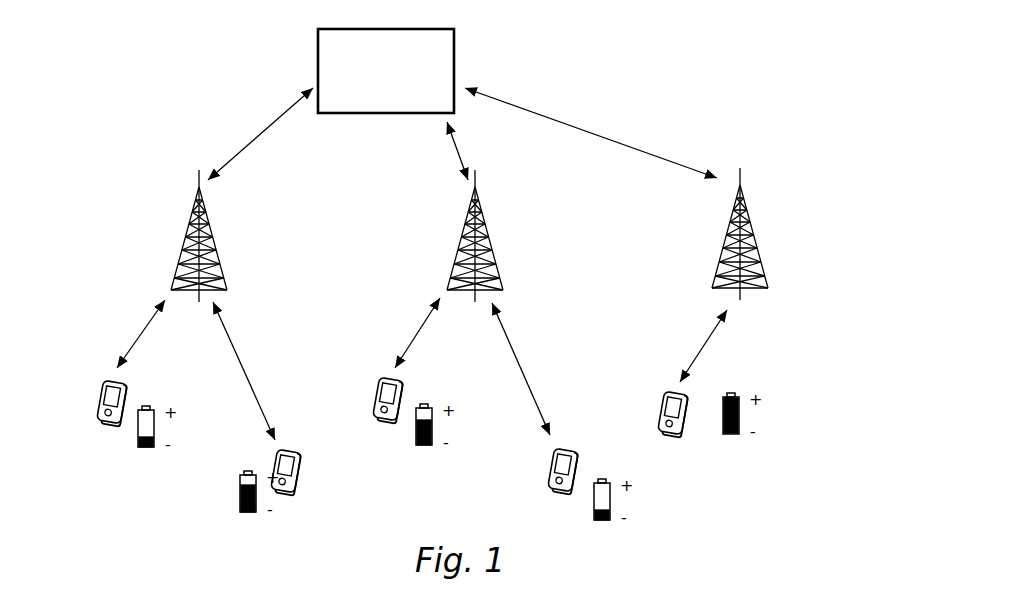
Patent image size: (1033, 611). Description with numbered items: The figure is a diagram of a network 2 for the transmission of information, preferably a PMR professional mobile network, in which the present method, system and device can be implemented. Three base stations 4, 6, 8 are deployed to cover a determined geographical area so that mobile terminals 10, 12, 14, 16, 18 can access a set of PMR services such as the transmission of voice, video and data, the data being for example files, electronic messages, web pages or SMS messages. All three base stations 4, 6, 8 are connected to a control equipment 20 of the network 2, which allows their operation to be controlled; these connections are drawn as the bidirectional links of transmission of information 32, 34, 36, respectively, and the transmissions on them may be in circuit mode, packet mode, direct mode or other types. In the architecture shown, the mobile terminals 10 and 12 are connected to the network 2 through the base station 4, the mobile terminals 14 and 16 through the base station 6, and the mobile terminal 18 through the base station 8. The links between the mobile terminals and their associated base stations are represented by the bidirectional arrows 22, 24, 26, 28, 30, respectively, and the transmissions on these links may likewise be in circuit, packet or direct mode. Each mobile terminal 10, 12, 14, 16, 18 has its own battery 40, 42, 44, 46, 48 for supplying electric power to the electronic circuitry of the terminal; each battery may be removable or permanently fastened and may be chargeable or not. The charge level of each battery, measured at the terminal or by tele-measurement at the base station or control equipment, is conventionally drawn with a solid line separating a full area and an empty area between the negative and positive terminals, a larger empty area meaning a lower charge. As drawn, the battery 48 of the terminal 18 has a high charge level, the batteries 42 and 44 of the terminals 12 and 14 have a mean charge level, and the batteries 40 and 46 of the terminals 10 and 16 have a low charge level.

The network 2 is at (630, 80).
The base station 4 is at (186, 246).
The base station 6 is at (462, 246).
The base station 8 is at (726, 246).
The mobile terminal 10 is at (98, 401).
The mobile terminal 12 is at (300, 475).
The mobile terminal 14 is at (375, 397).
The mobile terminal 16 is at (550, 468).
The mobile terminal 18 is at (661, 411).
The control equipment 20 is at (440, 44).
The bidirectional arrow 22 is at (141, 334).
The bidirectional arrow 24 is at (248, 369).
The bidirectional arrow 26 is at (414, 331).
The bidirectional arrow 28 is at (524, 371).
The bidirectional arrow 30 is at (700, 346).
The bidirectional link of transmission of information 32 is at (256, 143).
The bidirectional link of transmission of information 34 is at (458, 151).
The bidirectional link of transmission of information 36 is at (641, 153).
The battery 40 is at (145, 448).
The battery 42 is at (247, 514).
The battery 44 is at (423, 447).
The battery 46 is at (600, 522).
The battery 48 is at (728, 436).